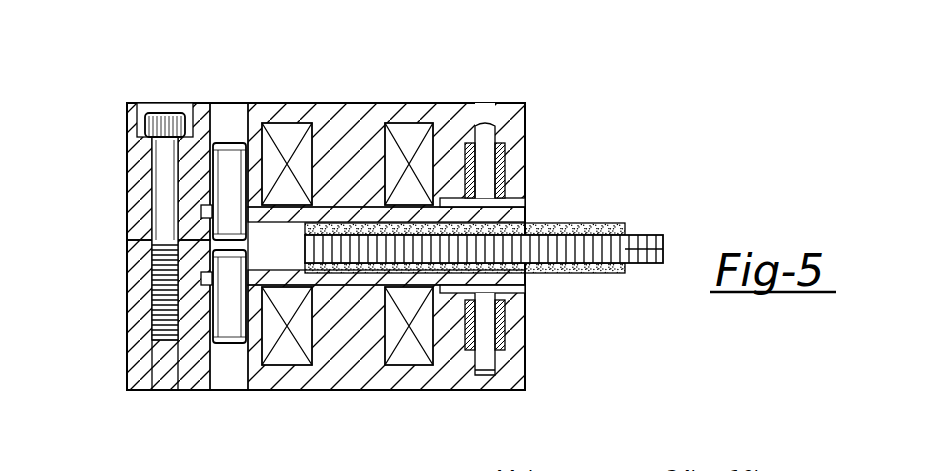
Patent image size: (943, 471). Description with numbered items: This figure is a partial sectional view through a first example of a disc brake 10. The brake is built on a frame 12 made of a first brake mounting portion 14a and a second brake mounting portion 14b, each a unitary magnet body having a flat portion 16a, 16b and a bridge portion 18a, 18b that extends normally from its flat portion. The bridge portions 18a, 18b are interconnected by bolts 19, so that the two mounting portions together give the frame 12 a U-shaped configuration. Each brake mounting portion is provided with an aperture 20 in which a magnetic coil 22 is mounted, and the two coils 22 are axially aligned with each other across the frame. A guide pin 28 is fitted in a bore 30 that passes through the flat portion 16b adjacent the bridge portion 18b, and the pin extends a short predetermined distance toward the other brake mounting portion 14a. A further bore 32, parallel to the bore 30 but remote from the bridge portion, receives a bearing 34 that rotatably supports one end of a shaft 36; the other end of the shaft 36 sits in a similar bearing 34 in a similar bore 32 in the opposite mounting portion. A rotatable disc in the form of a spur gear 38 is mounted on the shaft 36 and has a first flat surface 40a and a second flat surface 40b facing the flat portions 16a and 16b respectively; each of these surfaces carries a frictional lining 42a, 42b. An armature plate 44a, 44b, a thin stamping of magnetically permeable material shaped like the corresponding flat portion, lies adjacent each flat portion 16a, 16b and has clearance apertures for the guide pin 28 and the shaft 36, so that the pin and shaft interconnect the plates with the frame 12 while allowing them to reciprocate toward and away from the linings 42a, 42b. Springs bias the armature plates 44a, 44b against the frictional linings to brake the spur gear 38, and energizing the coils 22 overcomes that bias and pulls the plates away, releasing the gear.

The disc brake 10 is at (598, 22).
The frame 12 is at (533, 110).
The first brake mounting portion 14a is at (352, 177).
The second brake mounting portion 14b is at (352, 347).
The flat portion 16a is at (360, 112).
The flat portion 16b is at (440, 382).
The bridge portion 18a is at (137, 228).
The bridge portion 18b is at (128, 282).
The bolts 19 is at (160, 162).
The aperture 20 is at (305, 128).
The magnetic coil 22 is at (268, 125).
The guide pin 28 is at (210, 332).
The bore 30 is at (215, 378).
The bore 32 is at (490, 177).
The bearing 34 is at (495, 150).
The shaft 36 is at (505, 362).
The spur gear 38 is at (662, 248).
The first flat surface 40a is at (600, 222).
The second flat surface 40b is at (590, 273).
The frictional lining 42a is at (540, 226).
The frictional lining 42b is at (540, 265).
The armature plate 44a is at (257, 226).
The armature plate 44b is at (386, 267).